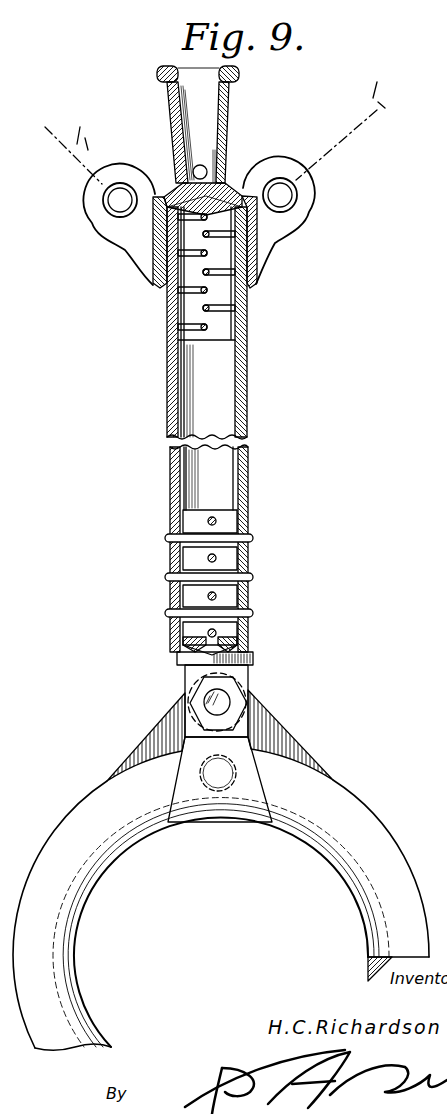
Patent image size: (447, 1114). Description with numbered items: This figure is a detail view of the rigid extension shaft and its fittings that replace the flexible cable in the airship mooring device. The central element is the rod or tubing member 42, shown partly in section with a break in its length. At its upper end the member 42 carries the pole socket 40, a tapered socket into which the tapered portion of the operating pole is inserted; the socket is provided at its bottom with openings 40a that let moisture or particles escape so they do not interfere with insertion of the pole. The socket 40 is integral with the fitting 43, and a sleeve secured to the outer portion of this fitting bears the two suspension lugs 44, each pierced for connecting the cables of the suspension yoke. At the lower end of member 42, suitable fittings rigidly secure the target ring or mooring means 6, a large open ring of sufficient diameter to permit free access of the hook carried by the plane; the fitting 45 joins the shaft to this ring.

The target ring 6 is at (345, 800).
The pole socket 40 is at (218, 118).
The openings 40a is at (214, 166).
The rod or tubing member 42 is at (248, 398).
The fitting 43 is at (230, 181).
The suspension lugs 44 is at (112, 200).
The coupling 45 is at (240, 672).